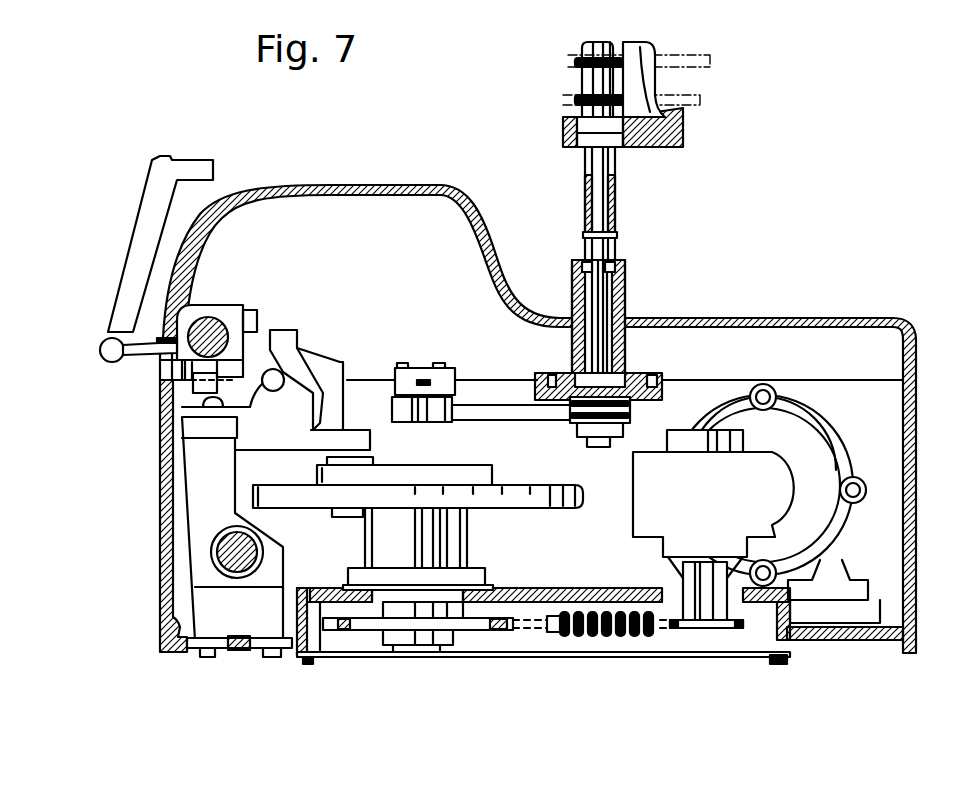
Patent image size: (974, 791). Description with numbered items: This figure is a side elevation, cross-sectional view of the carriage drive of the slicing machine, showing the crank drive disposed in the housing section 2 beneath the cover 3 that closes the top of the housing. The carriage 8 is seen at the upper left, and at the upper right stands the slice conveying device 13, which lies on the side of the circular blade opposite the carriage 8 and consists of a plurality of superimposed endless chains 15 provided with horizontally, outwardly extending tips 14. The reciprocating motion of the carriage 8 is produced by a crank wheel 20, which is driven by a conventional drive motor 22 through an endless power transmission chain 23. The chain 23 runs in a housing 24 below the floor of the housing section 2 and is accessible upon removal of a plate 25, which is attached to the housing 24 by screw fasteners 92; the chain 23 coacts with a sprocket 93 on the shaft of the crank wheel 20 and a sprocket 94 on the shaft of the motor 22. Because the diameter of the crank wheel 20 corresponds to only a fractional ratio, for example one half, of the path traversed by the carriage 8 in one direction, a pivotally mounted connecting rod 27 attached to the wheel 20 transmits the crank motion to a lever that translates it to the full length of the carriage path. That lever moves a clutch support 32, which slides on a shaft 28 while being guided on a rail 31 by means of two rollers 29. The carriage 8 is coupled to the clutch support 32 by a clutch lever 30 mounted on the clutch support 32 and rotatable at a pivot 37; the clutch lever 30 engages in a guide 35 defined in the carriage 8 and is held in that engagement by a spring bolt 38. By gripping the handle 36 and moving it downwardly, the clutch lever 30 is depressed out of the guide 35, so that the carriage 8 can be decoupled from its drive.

The housing section 2 is at (907, 597).
The lid / cover 3 is at (838, 317).
The carriage 8 is at (133, 270).
The slice conveying device 13 is at (552, 153).
The tips 14 is at (567, 62).
The endless chains 15 is at (691, 105).
The crank wheel 20 is at (511, 500).
The drive motor 22 is at (832, 428).
The power transmission chain 23 is at (597, 641).
The housing 24 is at (303, 633).
The plate 25 is at (705, 655).
The connecting rod 27 is at (435, 475).
The shaft 28 is at (230, 557).
The rollers 29 is at (193, 648).
The clutch lever 30 is at (193, 387).
The rail 31 is at (253, 657).
The clutch support 32 is at (257, 423).
The guide 35 is at (190, 395).
The handle 36 is at (100, 350).
The pivot 37 is at (279, 376).
The spring bolt 38 is at (200, 410).
The screw fasteners 92 is at (306, 665).
The sprocket 93 is at (495, 631).
The sprocket 94 is at (687, 629).